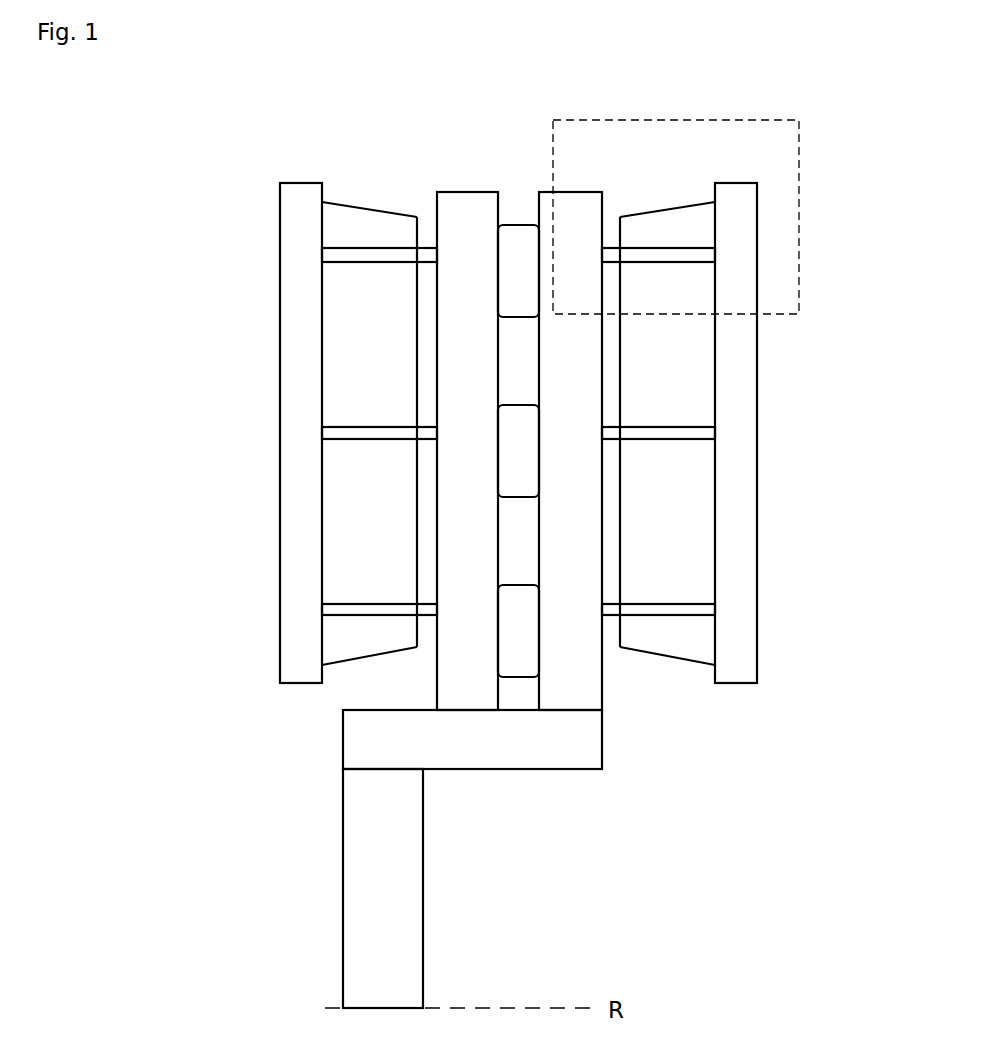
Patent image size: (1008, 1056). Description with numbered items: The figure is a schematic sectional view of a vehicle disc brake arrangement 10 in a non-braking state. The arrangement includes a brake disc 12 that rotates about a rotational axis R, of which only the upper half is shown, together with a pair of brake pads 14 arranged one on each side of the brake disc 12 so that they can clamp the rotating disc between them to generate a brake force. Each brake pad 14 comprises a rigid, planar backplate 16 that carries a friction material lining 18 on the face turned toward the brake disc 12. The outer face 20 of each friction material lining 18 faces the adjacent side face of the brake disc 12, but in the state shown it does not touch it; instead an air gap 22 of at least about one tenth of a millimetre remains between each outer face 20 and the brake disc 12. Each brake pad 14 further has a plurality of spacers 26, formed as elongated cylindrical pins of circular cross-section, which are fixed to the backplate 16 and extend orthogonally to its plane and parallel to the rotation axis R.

The vehicle disc brake arrangement 10 is at (814, 199).
The brake disc 12 is at (355, 846).
The brake pad 14 is at (259, 489).
The backplate 16 is at (302, 672).
The friction material lining 18 is at (360, 222).
The outer face 20 is at (419, 280).
The air gap 22 is at (426, 647).
The spacer 26 is at (342, 263).